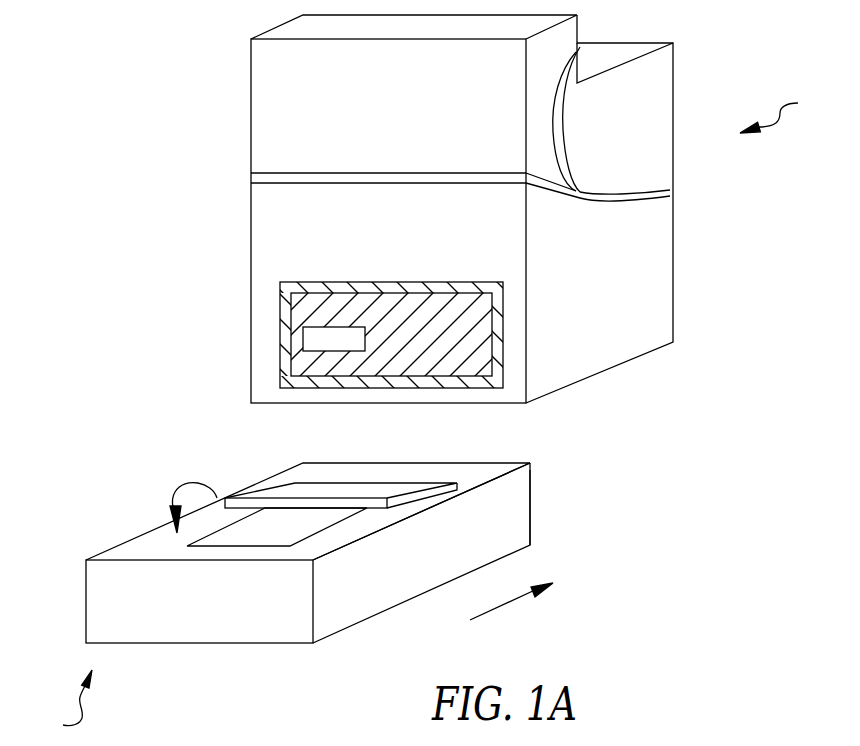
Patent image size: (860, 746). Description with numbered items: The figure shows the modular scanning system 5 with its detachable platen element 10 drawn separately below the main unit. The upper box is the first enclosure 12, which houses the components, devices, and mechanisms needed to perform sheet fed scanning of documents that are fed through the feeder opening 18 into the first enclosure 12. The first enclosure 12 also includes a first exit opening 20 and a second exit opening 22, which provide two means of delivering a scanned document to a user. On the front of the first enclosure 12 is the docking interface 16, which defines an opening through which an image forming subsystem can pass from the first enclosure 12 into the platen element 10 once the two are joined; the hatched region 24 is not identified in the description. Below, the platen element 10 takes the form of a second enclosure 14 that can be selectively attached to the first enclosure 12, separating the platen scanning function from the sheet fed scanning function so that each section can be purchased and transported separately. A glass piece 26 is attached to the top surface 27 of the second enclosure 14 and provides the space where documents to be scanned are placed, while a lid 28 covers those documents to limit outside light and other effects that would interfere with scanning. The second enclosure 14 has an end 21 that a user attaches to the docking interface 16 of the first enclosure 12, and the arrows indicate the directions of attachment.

The modular scanning system 5 is at (778, 112).
The platen element 10 is at (58, 704).
The first enclosure 12 is at (617, 365).
The second enclosure 14 is at (252, 643).
The docking interface 16 is at (488, 388).
The feeder opening 18 is at (670, 193).
The first exit opening 20 is at (578, 53).
The end 21 is at (530, 505).
The second exit opening 22 is at (251, 178).
The notch 24 is at (652, 132).
The glass piece 26 is at (248, 535).
The top surface 27 is at (360, 525).
The lid 28 is at (338, 492).